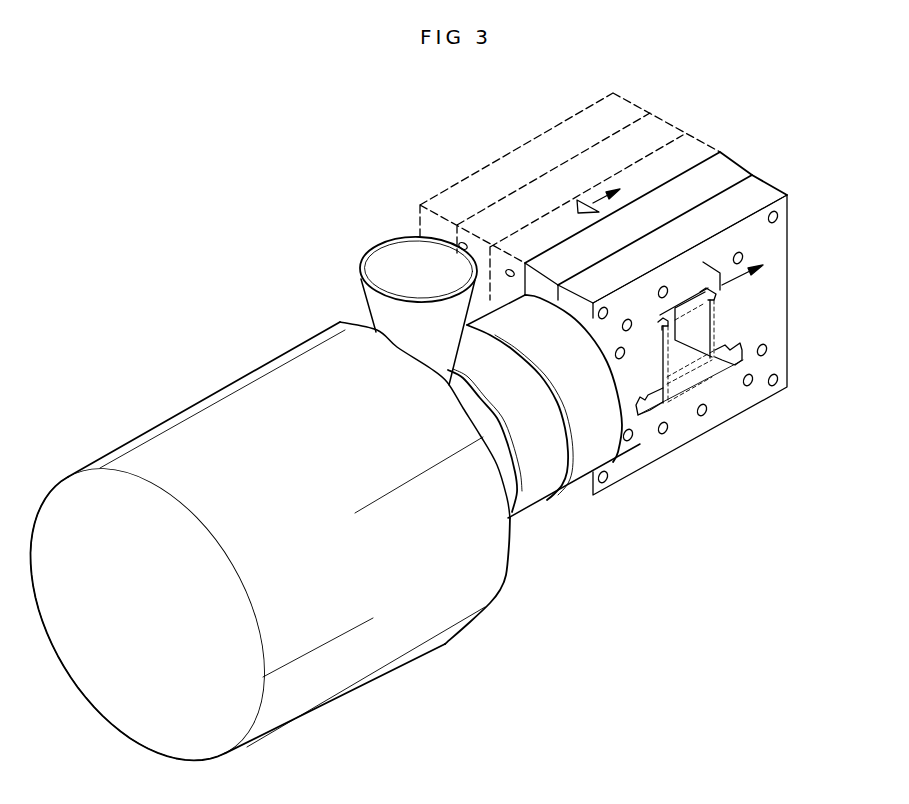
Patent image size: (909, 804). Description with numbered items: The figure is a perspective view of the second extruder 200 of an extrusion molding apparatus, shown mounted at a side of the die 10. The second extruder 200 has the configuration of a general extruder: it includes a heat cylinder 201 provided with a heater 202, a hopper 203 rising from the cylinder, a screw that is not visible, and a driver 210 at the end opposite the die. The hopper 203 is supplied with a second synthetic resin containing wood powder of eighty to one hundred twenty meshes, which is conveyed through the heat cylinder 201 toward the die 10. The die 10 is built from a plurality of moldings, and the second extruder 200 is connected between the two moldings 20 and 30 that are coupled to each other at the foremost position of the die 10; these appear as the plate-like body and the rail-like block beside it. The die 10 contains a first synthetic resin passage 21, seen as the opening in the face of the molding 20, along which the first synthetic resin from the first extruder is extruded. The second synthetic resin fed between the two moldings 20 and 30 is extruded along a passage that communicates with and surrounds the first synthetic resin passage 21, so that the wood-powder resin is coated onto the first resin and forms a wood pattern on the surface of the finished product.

The die 10 is at (644, 291).
The molding 20 is at (780, 331).
The first synthetic resin passage 21 is at (716, 373).
The molding 30 is at (727, 167).
The second extruder 200 is at (338, 518).
The heat cylinder 201 is at (570, 448).
The heater 202 is at (532, 472).
The hopper 203 is at (372, 294).
The driver 210 is at (437, 634).